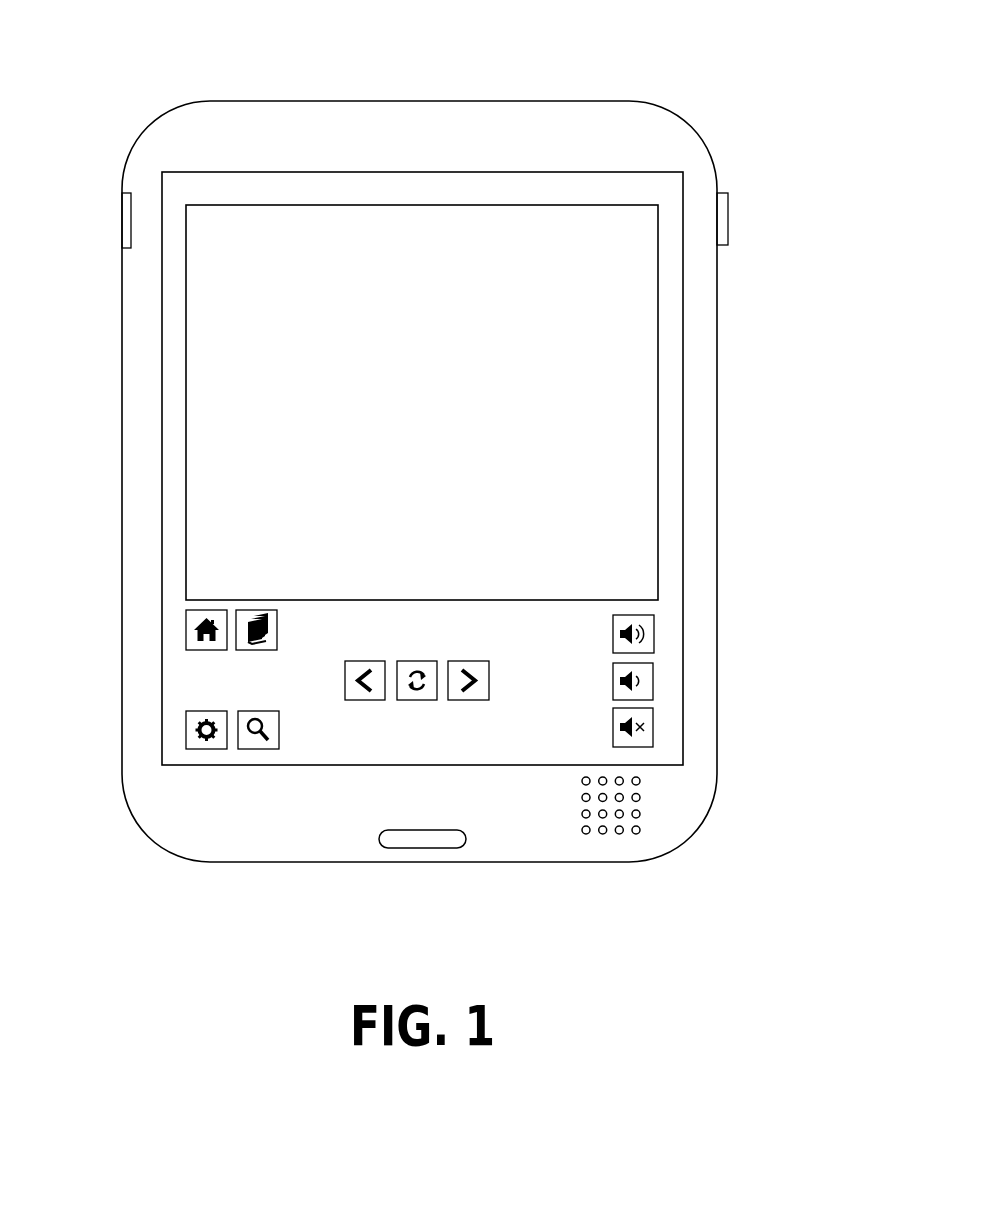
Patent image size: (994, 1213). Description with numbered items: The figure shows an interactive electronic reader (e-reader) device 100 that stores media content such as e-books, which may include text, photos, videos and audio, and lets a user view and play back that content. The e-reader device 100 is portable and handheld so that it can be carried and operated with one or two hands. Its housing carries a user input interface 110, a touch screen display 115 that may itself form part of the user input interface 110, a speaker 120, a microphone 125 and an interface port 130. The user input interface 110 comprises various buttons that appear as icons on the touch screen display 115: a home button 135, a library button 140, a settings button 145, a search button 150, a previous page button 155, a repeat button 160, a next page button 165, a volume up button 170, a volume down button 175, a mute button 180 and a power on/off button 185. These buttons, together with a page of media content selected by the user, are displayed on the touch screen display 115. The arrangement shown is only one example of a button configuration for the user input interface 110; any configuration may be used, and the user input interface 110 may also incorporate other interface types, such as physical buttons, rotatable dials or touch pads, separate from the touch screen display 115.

The e-reader device 100 is at (602, 86).
The user input interface 110 is at (683, 535).
The touch screen display 115 is at (666, 323).
The speaker 120 is at (643, 798).
The microphone 125 is at (425, 838).
The interface port 130 is at (127, 229).
The home button 135 is at (186, 634).
The library button 140 is at (265, 610).
The settings button 145 is at (186, 726).
The search button 150 is at (260, 711).
The previous page button 155 is at (365, 661).
The repeat button 160 is at (405, 661).
The next page button 165 is at (478, 661).
The volume up button 170 is at (654, 636).
The volume down button 175 is at (654, 680).
The mute button 180 is at (654, 727).
The power on/off button 185 is at (728, 215).